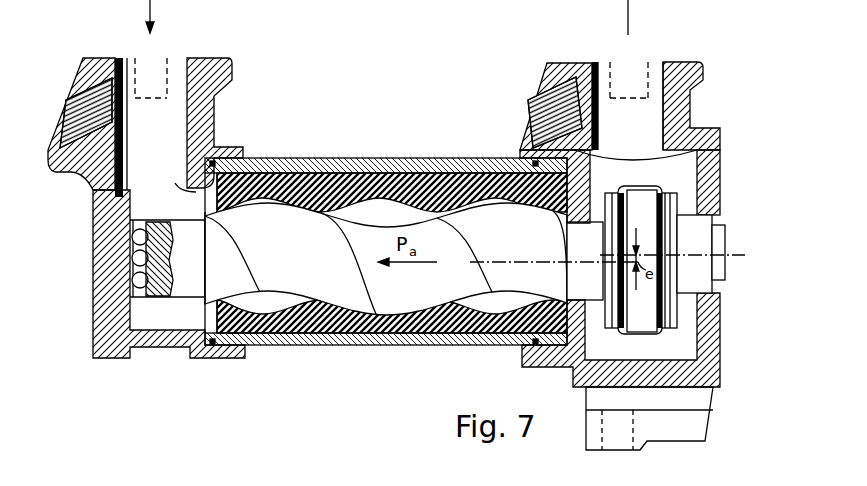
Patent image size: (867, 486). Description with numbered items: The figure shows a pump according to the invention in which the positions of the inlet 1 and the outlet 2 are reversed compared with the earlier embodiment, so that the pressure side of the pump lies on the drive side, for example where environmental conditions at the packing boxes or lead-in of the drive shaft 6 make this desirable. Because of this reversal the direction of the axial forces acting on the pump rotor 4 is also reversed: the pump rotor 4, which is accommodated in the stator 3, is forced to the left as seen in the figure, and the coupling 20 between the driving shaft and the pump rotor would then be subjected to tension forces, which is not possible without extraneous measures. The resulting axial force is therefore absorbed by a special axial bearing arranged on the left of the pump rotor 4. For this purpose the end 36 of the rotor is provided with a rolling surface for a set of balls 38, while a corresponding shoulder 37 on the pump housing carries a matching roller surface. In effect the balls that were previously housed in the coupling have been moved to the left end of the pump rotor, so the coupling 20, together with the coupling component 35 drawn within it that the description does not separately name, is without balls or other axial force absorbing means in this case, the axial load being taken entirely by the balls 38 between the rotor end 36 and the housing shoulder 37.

The inlet 1 is at (172, 140).
The outlet 2 is at (645, 121).
The stator 3 is at (370, 163).
The pump rotor 4 is at (373, 346).
The drive shaft 6 is at (718, 247).
The coupling 20 is at (689, 205).
The coupling 35 is at (656, 332).
The end of the rotor 36 is at (178, 290).
The shoulder on the pump housing 37 is at (95, 268).
The balls 38 is at (143, 231).